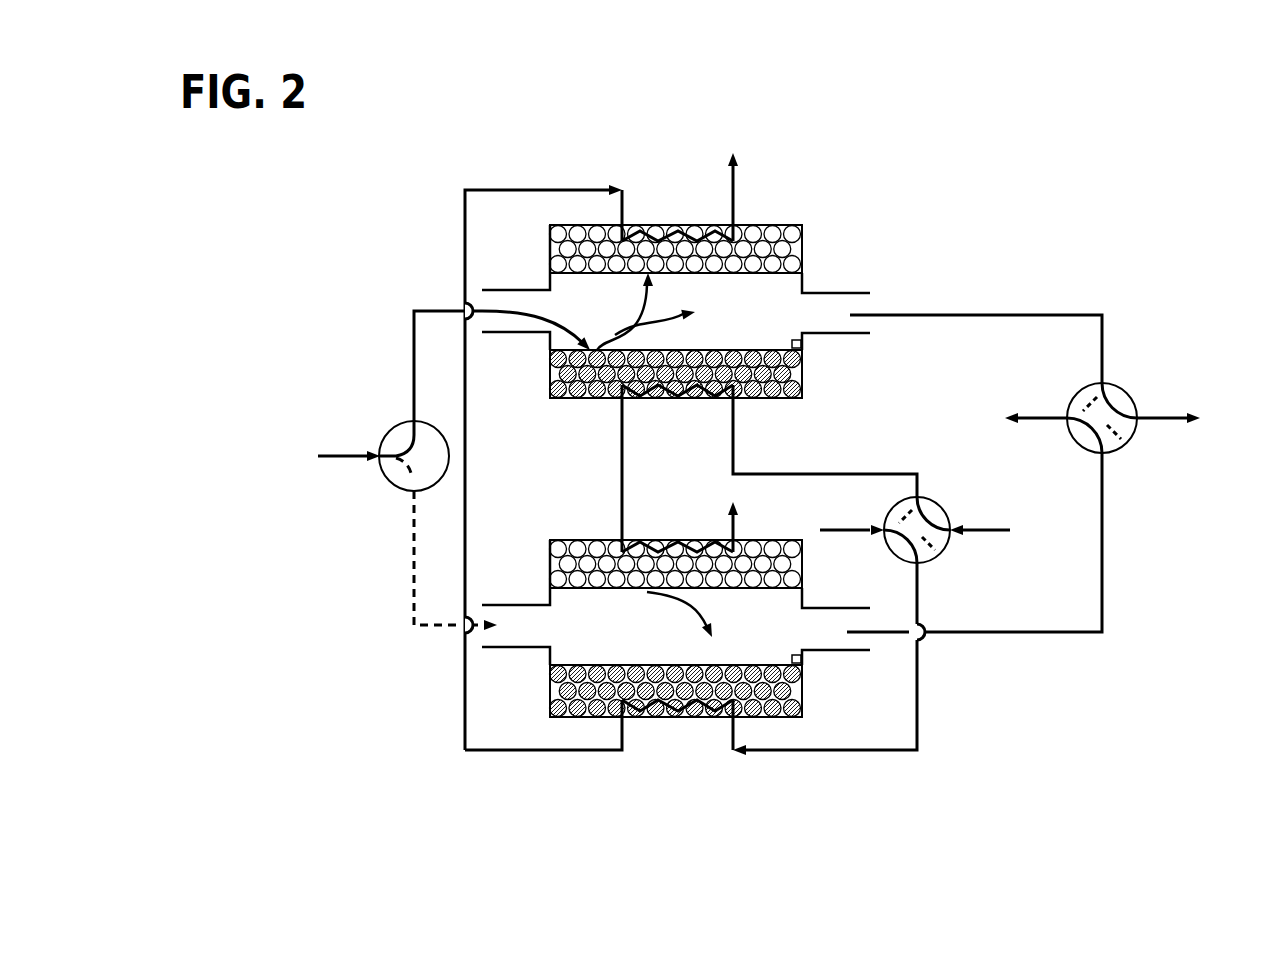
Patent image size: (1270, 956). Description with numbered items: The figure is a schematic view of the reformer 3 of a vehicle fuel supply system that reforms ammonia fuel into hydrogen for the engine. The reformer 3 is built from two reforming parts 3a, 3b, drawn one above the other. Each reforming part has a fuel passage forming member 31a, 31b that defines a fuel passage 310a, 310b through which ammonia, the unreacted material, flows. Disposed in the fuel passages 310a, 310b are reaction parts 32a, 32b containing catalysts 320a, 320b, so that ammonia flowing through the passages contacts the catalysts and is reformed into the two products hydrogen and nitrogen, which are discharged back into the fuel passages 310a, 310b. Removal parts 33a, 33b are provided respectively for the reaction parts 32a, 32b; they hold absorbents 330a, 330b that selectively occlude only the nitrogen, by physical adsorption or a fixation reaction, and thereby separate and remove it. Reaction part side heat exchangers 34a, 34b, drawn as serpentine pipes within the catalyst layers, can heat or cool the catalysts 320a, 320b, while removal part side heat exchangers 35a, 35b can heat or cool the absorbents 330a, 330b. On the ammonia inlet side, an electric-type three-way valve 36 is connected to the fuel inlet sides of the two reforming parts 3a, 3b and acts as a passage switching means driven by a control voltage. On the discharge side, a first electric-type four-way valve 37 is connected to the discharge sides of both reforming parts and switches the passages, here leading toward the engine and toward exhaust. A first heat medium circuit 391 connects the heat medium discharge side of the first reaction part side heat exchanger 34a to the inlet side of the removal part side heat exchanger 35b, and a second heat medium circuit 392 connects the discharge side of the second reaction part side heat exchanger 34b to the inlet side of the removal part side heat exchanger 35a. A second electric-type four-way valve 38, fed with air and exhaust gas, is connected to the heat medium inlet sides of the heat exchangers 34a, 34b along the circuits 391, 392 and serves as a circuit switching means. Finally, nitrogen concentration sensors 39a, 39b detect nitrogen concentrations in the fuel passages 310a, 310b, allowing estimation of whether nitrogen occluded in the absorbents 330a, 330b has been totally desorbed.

The reformer 3 is at (985, 228).
The first reforming part 3a is at (565, 410).
The second reforming part 3b is at (565, 528).
The fuel passage forming member 31a is at (547, 275).
The fuel passage forming member 31b is at (547, 592).
The fuel passage 310a is at (580, 292).
The fuel passage 310b is at (587, 640).
The reaction part 32a is at (807, 376).
The reaction part 32b is at (807, 690).
The catalyst 320a is at (752, 398).
The catalyst 320b is at (752, 715).
The removal part 33a is at (806, 253).
The removal part 33b is at (806, 565).
The absorbent 330a is at (755, 238).
The absorbent 330b is at (752, 550).
The first reaction part side heat exchanger 34a is at (660, 400).
The second reaction part side heat exchanger 34b is at (660, 715).
The removal part side heat exchanger 35a is at (667, 232).
The removal part side heat exchanger 35b is at (665, 540).
The electric-type three-way valve 36 is at (394, 427).
The first electric-type four-way valve 37 is at (1124, 385).
The second electric-type four-way valve 38 is at (943, 553).
The nitrogen concentration sensor 39a is at (801, 343).
The nitrogen concentration sensor 39b is at (801, 658).
The first heat medium circuit 391 is at (870, 473).
The second heat medium circuit 392 is at (868, 755).